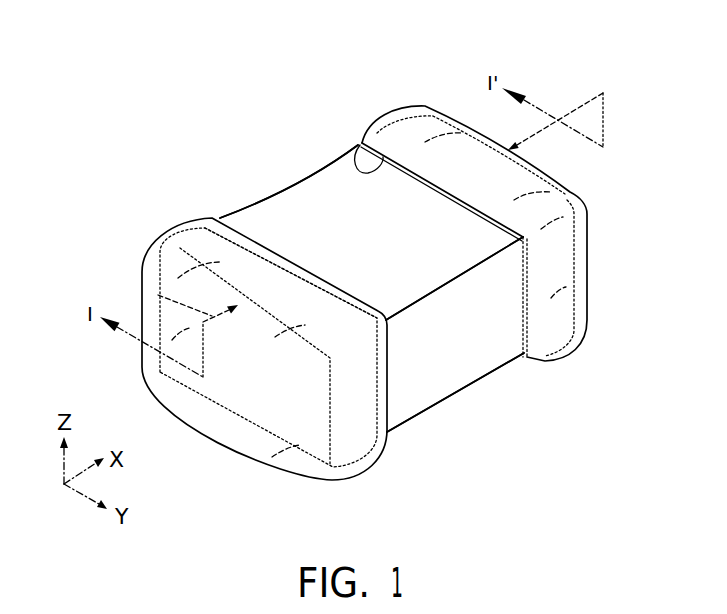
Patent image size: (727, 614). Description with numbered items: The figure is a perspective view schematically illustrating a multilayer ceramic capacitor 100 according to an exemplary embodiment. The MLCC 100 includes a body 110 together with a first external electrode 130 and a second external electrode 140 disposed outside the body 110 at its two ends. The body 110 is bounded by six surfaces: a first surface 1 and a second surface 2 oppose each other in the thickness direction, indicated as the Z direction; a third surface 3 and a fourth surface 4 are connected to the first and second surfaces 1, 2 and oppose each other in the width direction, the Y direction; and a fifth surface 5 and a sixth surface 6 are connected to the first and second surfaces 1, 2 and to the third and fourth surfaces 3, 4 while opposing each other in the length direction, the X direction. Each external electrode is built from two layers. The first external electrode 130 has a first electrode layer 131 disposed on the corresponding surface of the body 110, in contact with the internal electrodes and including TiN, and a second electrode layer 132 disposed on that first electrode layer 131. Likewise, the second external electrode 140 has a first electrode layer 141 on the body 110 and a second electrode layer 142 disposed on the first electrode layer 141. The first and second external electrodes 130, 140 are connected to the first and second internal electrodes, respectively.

The multilayer ceramic capacitor 100 is at (203, 76).
The body 110 is at (318, 203).
The first surface 1 is at (430, 406).
The second surface 2 is at (360, 217).
The third surface 3 is at (262, 395).
The fourth surface 4 is at (575, 255).
The fifth surface 5 is at (458, 338).
The sixth surface 6 is at (273, 193).
The first external electrode 130 is at (97, 170).
The first electrode layer 131 is at (238, 246).
The second electrode layer 132 is at (186, 231).
The second external electrode 140 is at (325, 37).
The first electrode layer 141 is at (360, 142).
The second electrode layer 142 is at (436, 117).